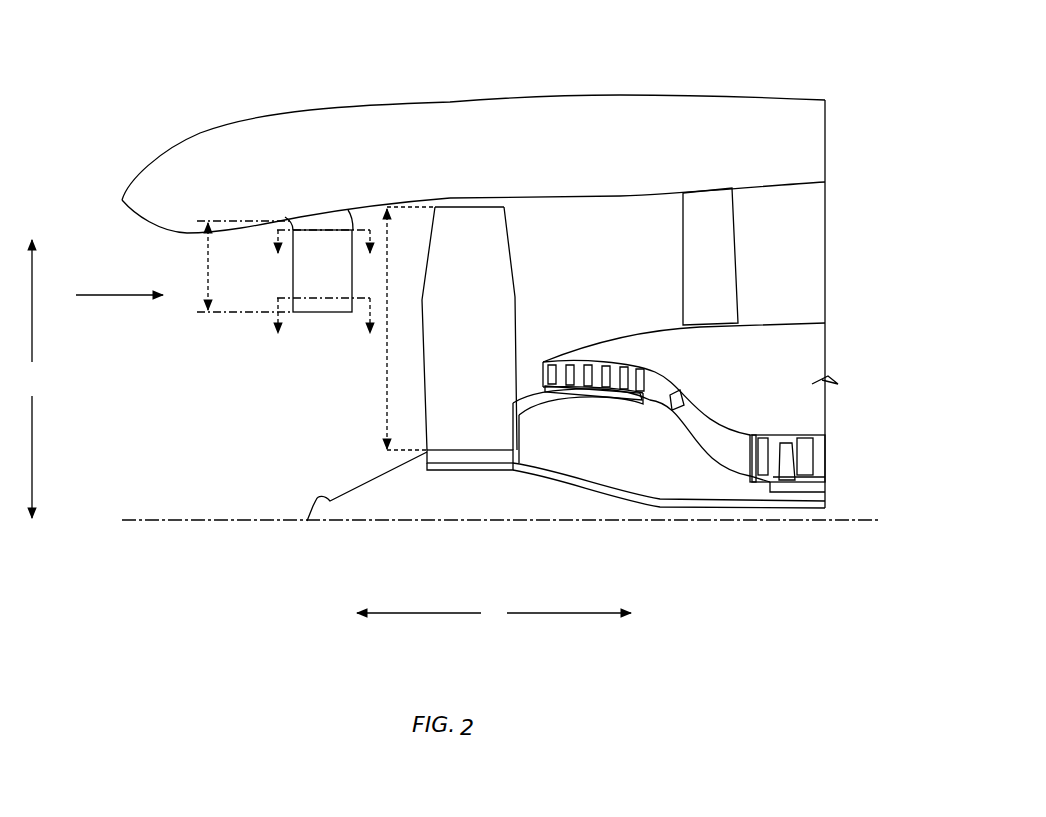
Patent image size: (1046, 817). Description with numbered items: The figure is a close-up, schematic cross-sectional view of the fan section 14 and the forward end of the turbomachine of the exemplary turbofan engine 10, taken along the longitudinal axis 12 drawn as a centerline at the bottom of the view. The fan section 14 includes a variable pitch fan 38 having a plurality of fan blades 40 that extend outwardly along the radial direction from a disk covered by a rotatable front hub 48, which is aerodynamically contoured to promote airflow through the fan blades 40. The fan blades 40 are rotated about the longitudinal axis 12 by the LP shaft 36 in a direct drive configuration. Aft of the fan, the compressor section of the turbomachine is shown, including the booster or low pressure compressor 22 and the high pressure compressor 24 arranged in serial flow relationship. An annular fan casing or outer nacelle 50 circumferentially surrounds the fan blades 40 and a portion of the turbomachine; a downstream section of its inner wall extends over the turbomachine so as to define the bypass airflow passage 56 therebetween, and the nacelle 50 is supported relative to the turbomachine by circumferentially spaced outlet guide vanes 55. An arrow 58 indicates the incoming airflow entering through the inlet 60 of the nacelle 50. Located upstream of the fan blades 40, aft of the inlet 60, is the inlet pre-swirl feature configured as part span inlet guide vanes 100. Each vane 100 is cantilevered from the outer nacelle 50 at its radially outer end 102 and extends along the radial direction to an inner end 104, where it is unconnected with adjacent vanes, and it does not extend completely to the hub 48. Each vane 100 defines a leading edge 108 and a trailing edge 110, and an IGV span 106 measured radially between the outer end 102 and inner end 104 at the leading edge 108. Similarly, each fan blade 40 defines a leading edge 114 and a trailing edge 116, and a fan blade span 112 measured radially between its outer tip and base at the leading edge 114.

The turbofan engine 10 is at (650, 66).
The longitudinal axis 12 is at (200, 521).
The fan section 14 is at (347, 129).
The low pressure compressor 22 is at (663, 366).
The high pressure compressor 24 is at (783, 420).
The low pressure shaft 36 is at (677, 508).
The variable pitch fan 38 is at (485, 183).
The fan blades 40 is at (505, 318).
The front hub 48 is at (312, 517).
The outer nacelle 50 is at (462, 100).
The outlet guide vanes 55 is at (732, 268).
The bypass airflow passage 56 is at (647, 279).
The airflow direction 58 is at (128, 297).
The inlet 60 is at (108, 256).
The part span inlet guide vanes 100 is at (309, 212).
The outer end 102 is at (337, 199).
The inner end 104 is at (325, 317).
The IGV span 106 is at (205, 268).
The leading edge 108 is at (266, 292).
The trailing edge 110 is at (356, 290).
The fan blade span 112 is at (385, 415).
The leading edge 114 is at (417, 304).
The trailing edge 116 is at (520, 292).